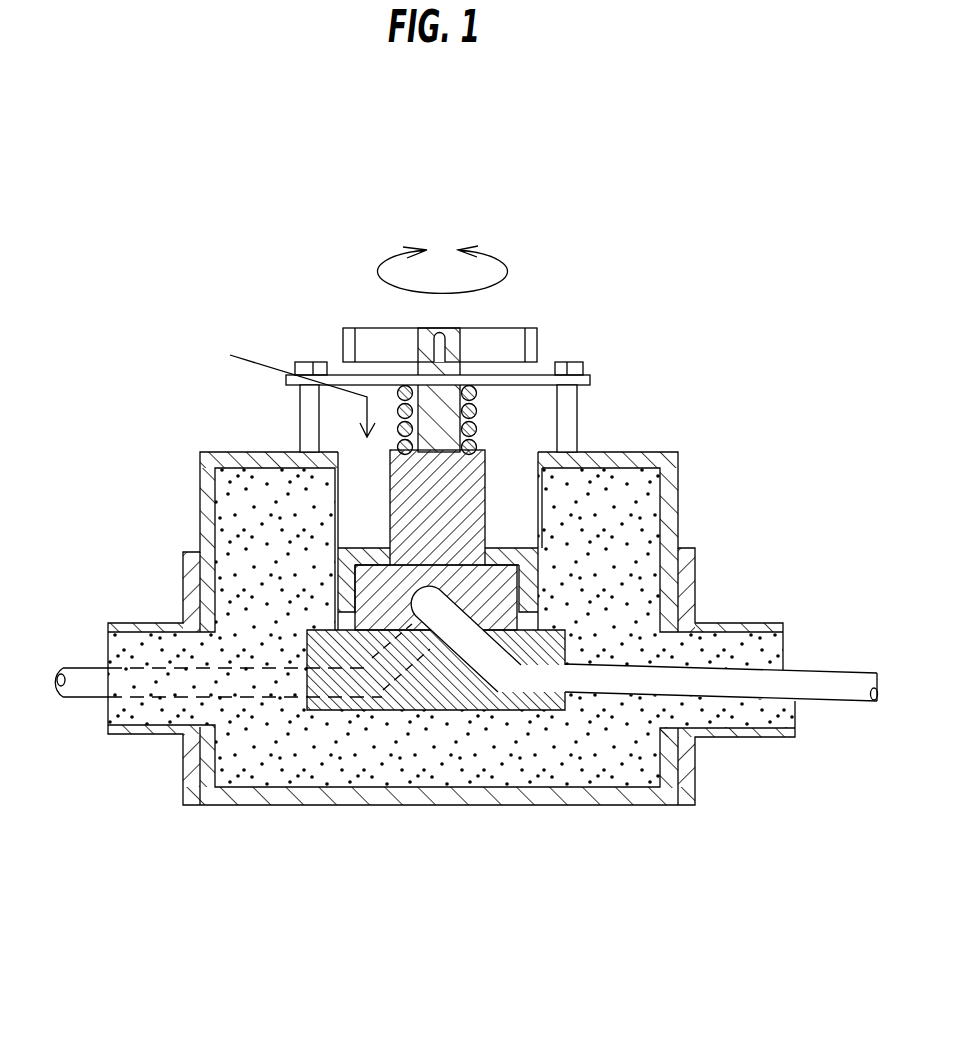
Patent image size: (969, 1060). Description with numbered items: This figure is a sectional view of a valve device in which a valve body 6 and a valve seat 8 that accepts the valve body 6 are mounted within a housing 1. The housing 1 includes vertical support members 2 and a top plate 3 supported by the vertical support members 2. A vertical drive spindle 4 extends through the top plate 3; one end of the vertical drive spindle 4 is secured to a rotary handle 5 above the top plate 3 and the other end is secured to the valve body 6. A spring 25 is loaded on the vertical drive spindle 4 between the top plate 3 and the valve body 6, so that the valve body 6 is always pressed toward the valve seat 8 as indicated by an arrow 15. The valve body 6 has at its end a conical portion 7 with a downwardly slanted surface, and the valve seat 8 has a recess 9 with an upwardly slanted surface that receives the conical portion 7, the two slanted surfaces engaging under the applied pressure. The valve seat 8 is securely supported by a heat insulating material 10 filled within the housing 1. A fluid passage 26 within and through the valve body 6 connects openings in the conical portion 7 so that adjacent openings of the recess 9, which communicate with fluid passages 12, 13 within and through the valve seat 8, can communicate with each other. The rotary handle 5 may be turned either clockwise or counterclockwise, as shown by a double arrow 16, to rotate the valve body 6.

The housing 1 is at (675, 510).
The vertical support members 2 is at (568, 433).
The top plate 3 is at (530, 375).
The vertical drive spindle 4 is at (432, 417).
The rotary handle 5 is at (490, 342).
The valve body 6 is at (395, 462).
The conical portion 7 is at (372, 640).
The valve seat 8 is at (412, 697).
The recess 9 is at (453, 670).
The heat insulating material 10 is at (293, 753).
The fluid passage 12 is at (90, 698).
The fluid passage 13 is at (822, 673).
The arrow 15 is at (276, 378).
The double arrow 16 is at (442, 293).
The spring 25 is at (398, 405).
The fluid passage 26 is at (436, 612).